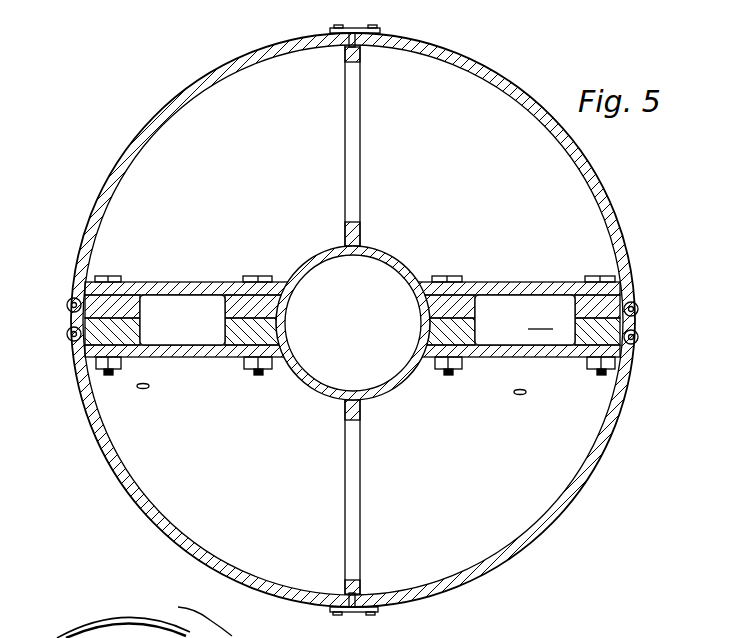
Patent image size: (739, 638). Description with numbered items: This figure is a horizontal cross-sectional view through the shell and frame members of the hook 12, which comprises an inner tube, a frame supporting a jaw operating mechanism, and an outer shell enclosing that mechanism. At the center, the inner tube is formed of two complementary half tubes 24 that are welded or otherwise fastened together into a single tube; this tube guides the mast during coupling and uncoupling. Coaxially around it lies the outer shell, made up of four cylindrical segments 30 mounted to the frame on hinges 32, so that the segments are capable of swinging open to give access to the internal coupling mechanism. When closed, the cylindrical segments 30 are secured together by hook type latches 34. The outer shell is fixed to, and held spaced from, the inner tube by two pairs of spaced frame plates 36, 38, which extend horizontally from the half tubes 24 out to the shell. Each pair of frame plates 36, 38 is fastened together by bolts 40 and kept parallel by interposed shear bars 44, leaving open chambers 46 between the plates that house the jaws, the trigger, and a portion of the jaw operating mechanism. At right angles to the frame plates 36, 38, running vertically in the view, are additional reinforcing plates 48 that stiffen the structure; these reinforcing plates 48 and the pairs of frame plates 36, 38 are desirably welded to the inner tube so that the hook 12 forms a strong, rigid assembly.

The hook 12 is at (625, 449).
The half tubes 24 is at (390, 386).
The cylindrical segments 30 is at (148, 126).
The hinges 32 is at (66, 334).
The hook type latches 34 is at (330, 31).
The frame plates 36 is at (508, 283).
The frame plates 38 is at (369, 319).
The bolts 40 is at (118, 278).
The shear bars 44 is at (212, 334).
The open chambers 46 is at (180, 331).
The reinforcing plates 48 is at (360, 243).